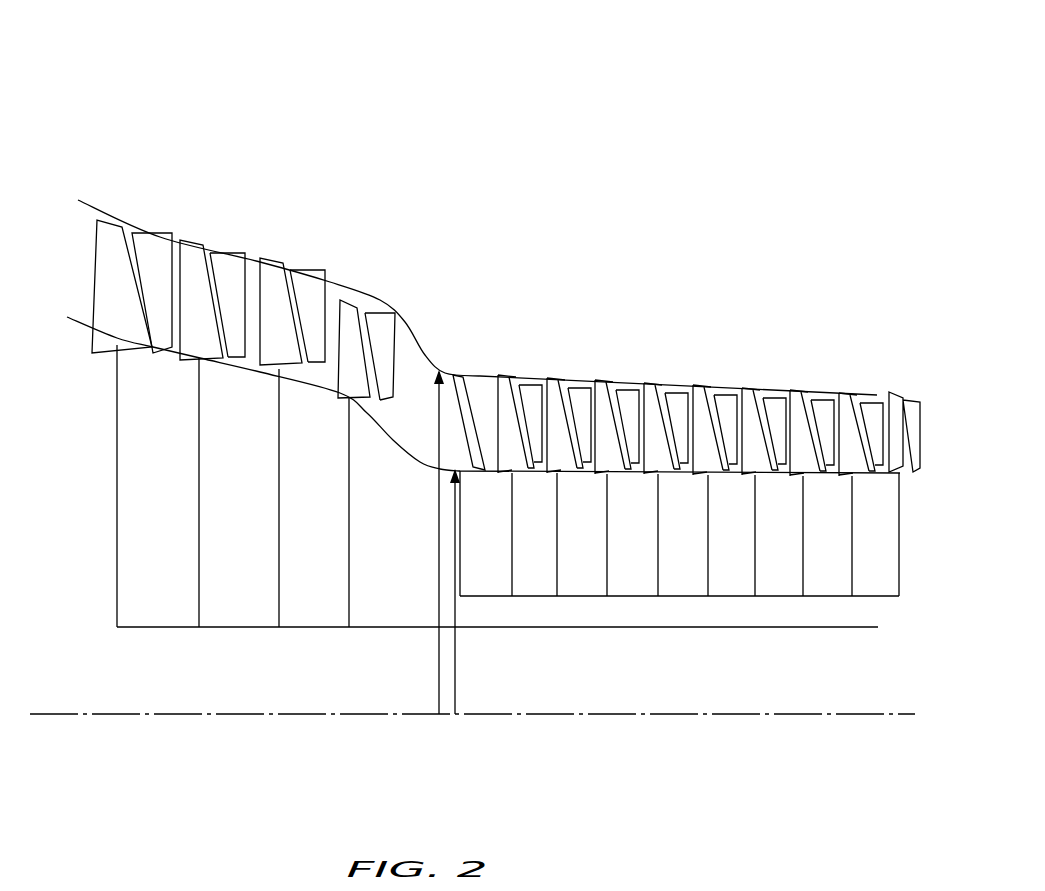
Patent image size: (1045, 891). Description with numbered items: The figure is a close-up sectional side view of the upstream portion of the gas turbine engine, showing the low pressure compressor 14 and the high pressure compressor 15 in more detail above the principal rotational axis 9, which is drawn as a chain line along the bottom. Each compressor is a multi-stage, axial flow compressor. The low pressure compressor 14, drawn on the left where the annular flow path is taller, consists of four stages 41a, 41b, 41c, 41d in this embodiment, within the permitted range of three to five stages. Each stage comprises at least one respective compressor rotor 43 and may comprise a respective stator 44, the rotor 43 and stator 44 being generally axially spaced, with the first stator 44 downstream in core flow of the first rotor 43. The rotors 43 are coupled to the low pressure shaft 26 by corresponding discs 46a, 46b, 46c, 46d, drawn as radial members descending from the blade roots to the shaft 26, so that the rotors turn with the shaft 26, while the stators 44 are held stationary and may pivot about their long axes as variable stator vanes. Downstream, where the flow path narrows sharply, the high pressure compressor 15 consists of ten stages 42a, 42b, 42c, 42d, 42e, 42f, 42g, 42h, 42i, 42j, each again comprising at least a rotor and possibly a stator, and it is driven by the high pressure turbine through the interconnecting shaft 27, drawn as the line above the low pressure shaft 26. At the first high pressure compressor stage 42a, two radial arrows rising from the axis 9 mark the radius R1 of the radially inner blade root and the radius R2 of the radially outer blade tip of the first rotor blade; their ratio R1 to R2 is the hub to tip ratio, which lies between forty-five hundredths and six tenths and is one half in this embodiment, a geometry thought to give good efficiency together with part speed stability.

The principal rotational axis 9 is at (812, 714).
The low pressure compressor 14 is at (276, 261).
The high pressure compressor 15 is at (699, 328).
The shaft 26 is at (580, 627).
The interconnecting shaft 27 is at (688, 596).
The low pressure compressor stage 41a is at (117, 212).
The low pressure compressor stage 41b is at (197, 238).
The low pressure compressor stage 41c is at (290, 242).
The low pressure compressor stage 41d is at (380, 275).
The high pressure compressor stage 42a is at (464, 358).
The high pressure compressor stage 42b is at (525, 360).
The high pressure compressor stage 42c is at (570, 365).
The high pressure compressor stage 42d is at (613, 378).
The high pressure compressor stage 42e is at (668, 378).
The high pressure compressor stage 42f is at (718, 378).
The high pressure compressor stage 42g is at (767, 380).
The high pressure compressor stage 42h is at (812, 382).
The high pressure compressor stage 42i is at (866, 383).
The high pressure compressor stage 42j is at (913, 480).
The compressor rotor 43 is at (97, 355).
The stator 44 is at (158, 350).
The disc 46a is at (117, 576).
The disc 46b is at (199, 578).
The disc 46c is at (279, 578).
The disc 46d is at (349, 578).
The radius of radially inner blade root R1 is at (455, 692).
The radius of radially outer blade tip R2 is at (433, 682).